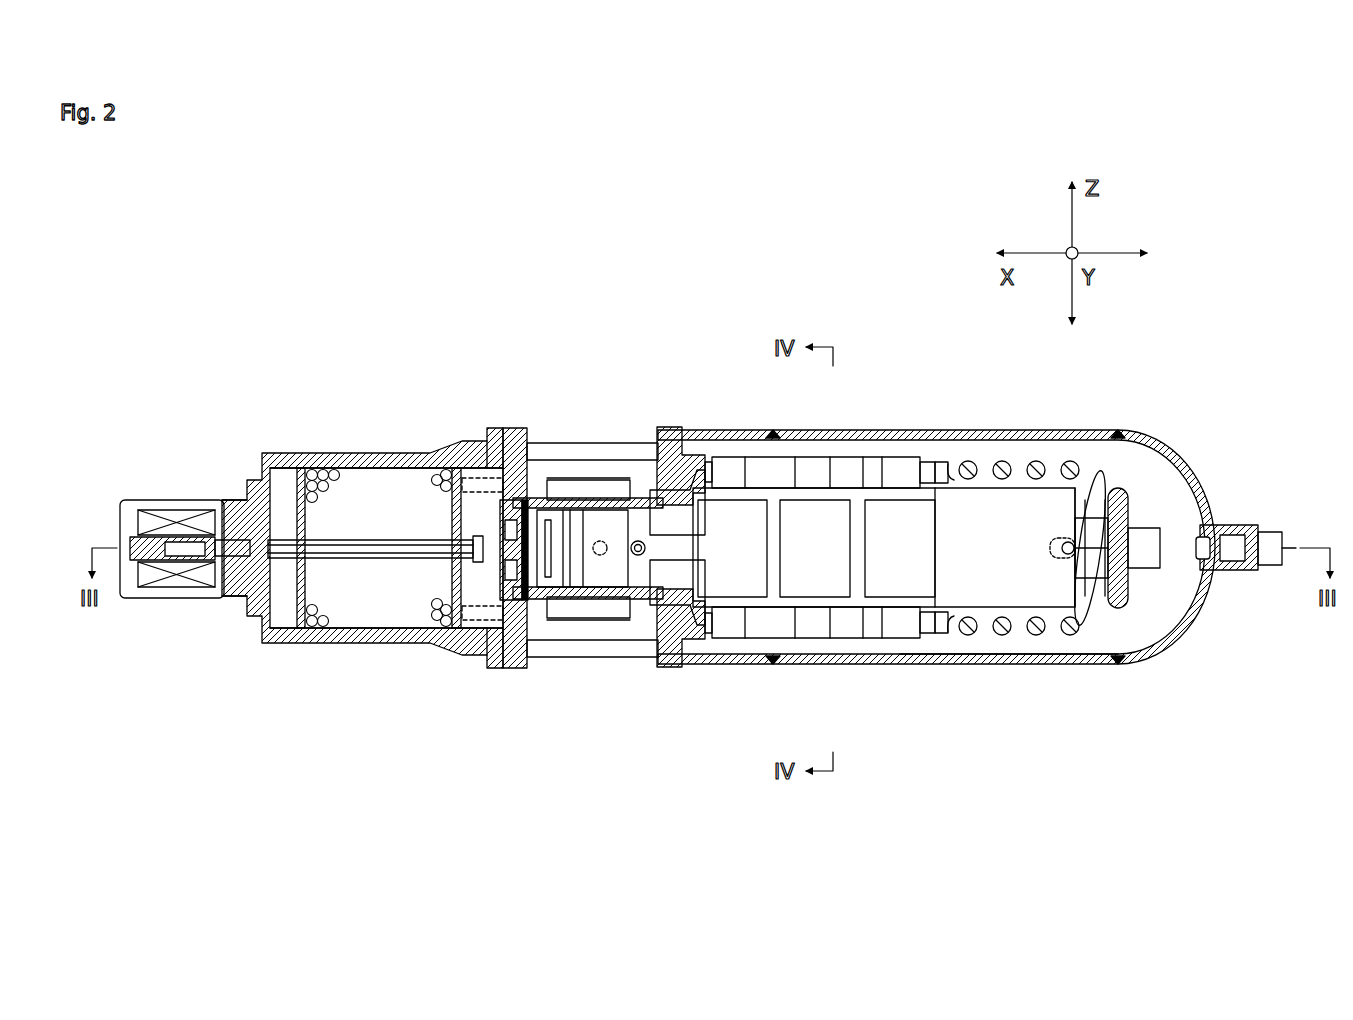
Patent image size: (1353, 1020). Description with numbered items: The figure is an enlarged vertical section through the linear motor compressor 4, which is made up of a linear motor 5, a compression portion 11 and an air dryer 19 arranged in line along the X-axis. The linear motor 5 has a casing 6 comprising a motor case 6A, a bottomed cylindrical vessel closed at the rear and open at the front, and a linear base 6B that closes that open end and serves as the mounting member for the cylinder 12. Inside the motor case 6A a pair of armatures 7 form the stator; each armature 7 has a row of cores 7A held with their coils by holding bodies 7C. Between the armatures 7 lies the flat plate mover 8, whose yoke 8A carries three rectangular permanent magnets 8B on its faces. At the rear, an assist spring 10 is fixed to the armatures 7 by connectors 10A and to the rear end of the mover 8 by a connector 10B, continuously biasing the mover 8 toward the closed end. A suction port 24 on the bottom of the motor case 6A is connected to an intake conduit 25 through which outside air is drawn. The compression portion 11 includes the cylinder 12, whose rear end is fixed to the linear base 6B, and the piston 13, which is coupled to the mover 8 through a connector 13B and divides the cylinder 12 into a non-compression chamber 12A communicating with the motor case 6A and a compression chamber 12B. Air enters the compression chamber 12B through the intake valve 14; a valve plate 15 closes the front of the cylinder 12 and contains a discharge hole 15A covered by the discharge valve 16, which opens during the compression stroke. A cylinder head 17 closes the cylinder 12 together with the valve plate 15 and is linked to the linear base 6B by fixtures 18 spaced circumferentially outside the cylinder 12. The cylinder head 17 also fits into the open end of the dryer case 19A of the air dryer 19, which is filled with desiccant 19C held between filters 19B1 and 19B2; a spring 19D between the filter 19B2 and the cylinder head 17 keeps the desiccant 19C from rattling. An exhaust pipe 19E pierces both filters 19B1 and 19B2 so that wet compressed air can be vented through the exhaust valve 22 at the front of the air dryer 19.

The linear motor compressor 4 is at (500, 266).
The linear motor 5 is at (893, 405).
The casing 6 is at (970, 430).
The motor case 6A is at (975, 664).
The linear base 6B is at (673, 642).
The armature 7 is at (813, 640).
The core 7A is at (777, 625).
The holding body 7C is at (720, 638).
The mover 8 is at (860, 496).
The yoke 8A is at (1009, 540).
The permanent magnet 8B is at (732, 537).
The spring 10 is at (1060, 630).
The connector 10A is at (938, 455).
The connector 10B is at (1100, 472).
The compression portion 11 is at (572, 424).
The cylinder 12 is at (597, 466).
The non-compression chamber 12A is at (643, 522).
The compression chamber 12B is at (547, 527).
The piston 13 is at (598, 582).
The connector 13B is at (640, 598).
The intake valve 14 is at (556, 600).
The valve plate 15 is at (514, 612).
The discharge hole 15A is at (530, 612).
The discharge valve 16 is at (524, 600).
The cylinder head 17 is at (507, 428).
The fixture 18 is at (618, 504).
The air dryer 19 is at (421, 450).
The dryer case 19A is at (346, 460).
The filter 19B1 is at (301, 632).
The filter 19B2 is at (458, 635).
The desiccant 19C is at (313, 472).
The spring 19D is at (461, 440).
The exhaust pipe 19E is at (381, 560).
The exhaust valve 22 is at (178, 510).
The suction port 24 is at (1241, 568).
The intake conduit 25 is at (1290, 548).